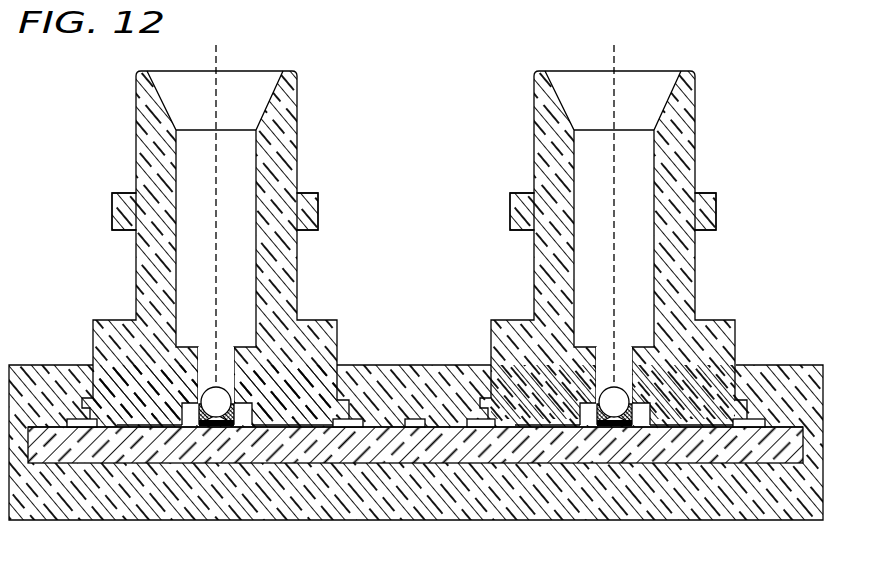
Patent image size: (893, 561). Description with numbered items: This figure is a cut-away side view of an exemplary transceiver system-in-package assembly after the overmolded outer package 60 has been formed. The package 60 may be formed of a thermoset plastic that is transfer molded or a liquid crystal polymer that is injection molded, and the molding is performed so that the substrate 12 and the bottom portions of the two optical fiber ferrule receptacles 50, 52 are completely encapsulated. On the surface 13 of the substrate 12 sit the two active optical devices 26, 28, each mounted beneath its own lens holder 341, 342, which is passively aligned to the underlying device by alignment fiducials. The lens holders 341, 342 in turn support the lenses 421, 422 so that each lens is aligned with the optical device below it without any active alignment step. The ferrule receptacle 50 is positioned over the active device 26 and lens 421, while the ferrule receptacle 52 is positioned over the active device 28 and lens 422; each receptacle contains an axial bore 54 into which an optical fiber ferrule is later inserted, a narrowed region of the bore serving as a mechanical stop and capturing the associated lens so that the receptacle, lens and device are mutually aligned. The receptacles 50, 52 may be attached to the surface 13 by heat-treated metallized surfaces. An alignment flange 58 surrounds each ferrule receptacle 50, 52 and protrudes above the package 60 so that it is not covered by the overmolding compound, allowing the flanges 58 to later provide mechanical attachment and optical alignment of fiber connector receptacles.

The substrate 12 is at (449, 456).
The surface of substrate 13 is at (793, 425).
The active device 26 is at (216, 428).
The active device 28 is at (614, 428).
The lens holder 341 is at (240, 428).
The lens holder 342 is at (638, 428).
The lens 421 is at (223, 388).
The lens 422 is at (621, 388).
The optical fiber ferrule receptacle 50 is at (216, 245).
The optical fiber ferrule receptacle 52 is at (545, 124).
The axial bore 54 is at (242, 168).
The alignment flange 58 is at (122, 211).
The overmolded outer package 60 is at (53, 370).